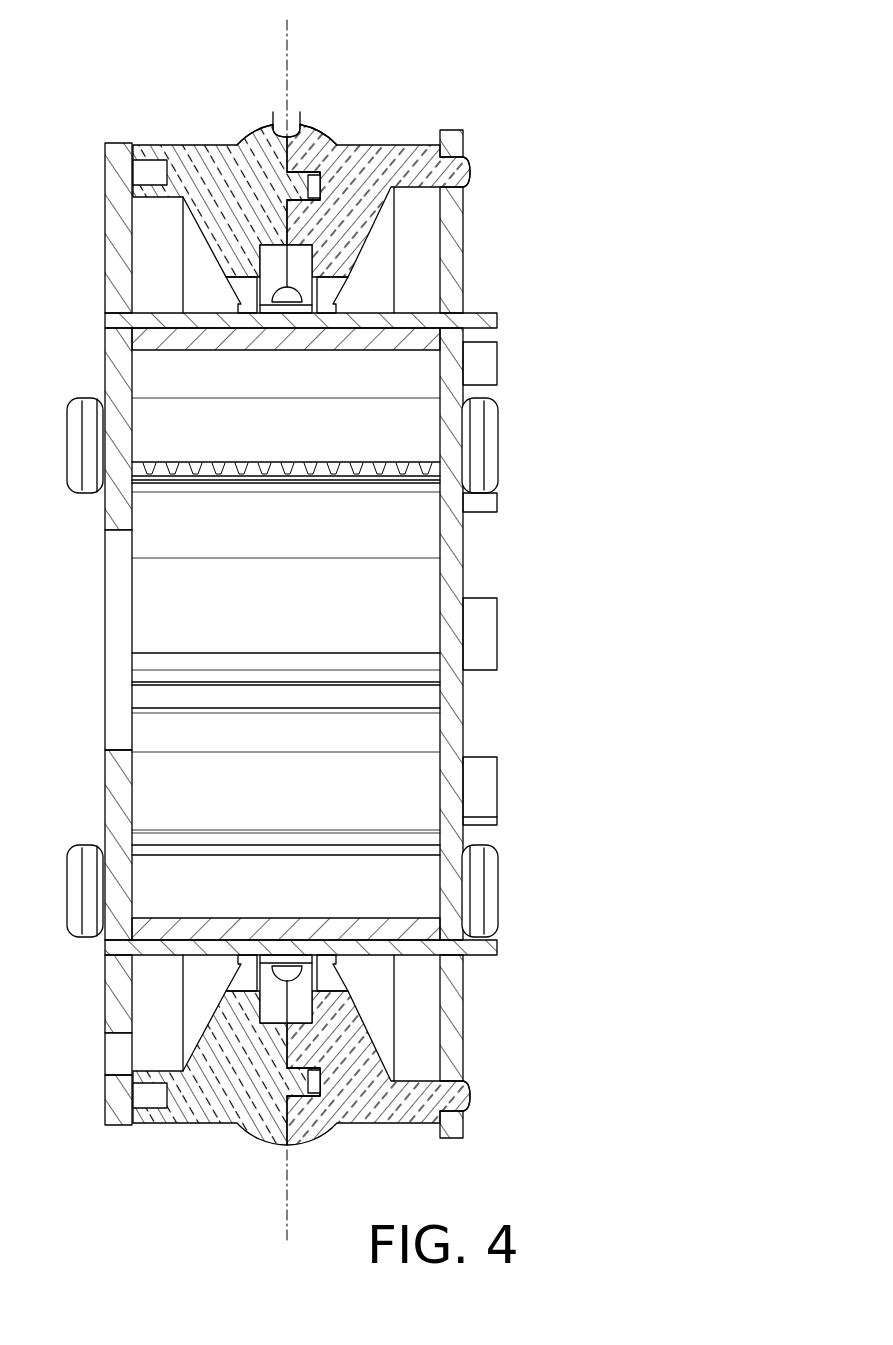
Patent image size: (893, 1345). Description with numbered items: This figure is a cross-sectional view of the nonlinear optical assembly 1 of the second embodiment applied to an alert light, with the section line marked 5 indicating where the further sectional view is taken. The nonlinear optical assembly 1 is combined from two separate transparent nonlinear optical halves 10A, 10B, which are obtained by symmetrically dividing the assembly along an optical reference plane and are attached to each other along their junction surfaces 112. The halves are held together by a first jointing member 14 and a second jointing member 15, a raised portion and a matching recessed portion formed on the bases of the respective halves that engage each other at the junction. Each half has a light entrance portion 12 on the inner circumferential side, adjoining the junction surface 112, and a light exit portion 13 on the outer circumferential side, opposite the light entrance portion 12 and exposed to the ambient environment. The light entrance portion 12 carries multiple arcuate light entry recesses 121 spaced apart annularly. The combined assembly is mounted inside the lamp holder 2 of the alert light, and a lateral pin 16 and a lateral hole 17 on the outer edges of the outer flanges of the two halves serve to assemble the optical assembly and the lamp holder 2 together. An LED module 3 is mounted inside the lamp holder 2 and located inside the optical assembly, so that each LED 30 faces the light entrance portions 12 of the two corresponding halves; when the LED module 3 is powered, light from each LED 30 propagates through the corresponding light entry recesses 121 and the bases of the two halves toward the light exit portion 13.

The nonlinear optical assembly 1 is at (402, 55).
The lamp holder 2 is at (470, 130).
The LED module 3 is at (268, 272).
The section line 5- 5 is at (272, 32).
The nonlinear optical half 10A is at (411, 132).
The nonlinear optical half 10B is at (172, 130).
The light entrance portion 12 is at (327, 309).
The light exit portion 13 is at (242, 143).
The first jointing member 14 is at (310, 183).
The second jointing member 15 is at (310, 205).
The lateral pin 16 is at (458, 172).
The lateral hole 17 is at (140, 165).
The LED 30 is at (283, 297).
The junction surface 112 is at (273, 112).
The light entry recess 121 is at (330, 288).